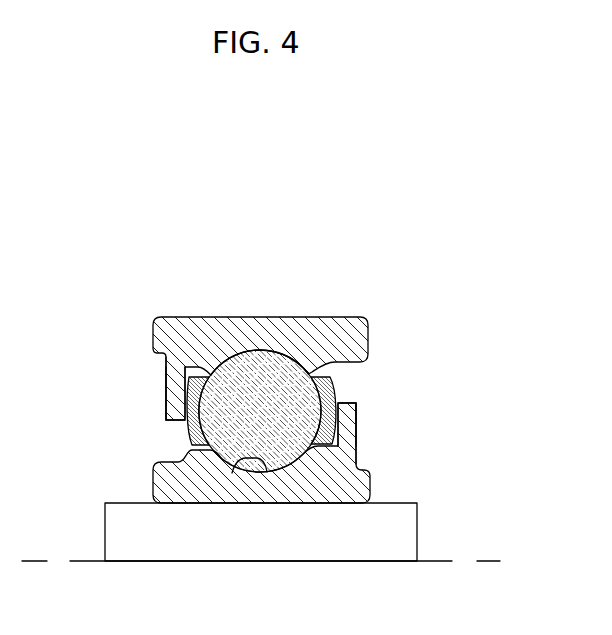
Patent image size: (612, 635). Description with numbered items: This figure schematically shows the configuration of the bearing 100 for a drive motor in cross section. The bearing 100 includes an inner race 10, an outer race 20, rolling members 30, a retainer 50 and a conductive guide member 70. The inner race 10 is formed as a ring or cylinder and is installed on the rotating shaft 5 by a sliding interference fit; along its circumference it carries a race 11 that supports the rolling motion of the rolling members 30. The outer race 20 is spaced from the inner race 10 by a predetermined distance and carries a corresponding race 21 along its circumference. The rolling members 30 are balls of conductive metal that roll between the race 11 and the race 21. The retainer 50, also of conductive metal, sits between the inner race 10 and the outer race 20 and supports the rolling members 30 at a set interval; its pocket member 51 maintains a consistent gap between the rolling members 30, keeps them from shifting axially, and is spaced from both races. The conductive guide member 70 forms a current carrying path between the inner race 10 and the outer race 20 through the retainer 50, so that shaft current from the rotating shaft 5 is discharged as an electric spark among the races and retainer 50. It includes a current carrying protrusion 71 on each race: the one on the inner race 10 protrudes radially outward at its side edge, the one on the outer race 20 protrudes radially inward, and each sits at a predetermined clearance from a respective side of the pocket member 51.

The bearing 100 is at (129, 254).
The outer race 20 is at (372, 333).
The inner race 10 is at (372, 487).
The race 21 is at (250, 362).
The rolling members 30 is at (288, 370).
The retainer 50 is at (337, 387).
The pocket member 51 is at (188, 438).
The conductive guide member 70 is at (161, 392).
The current carrying protrusion 71 is at (166, 372).
The race 11 is at (232, 473).
The rotating shaft 5 is at (363, 540).